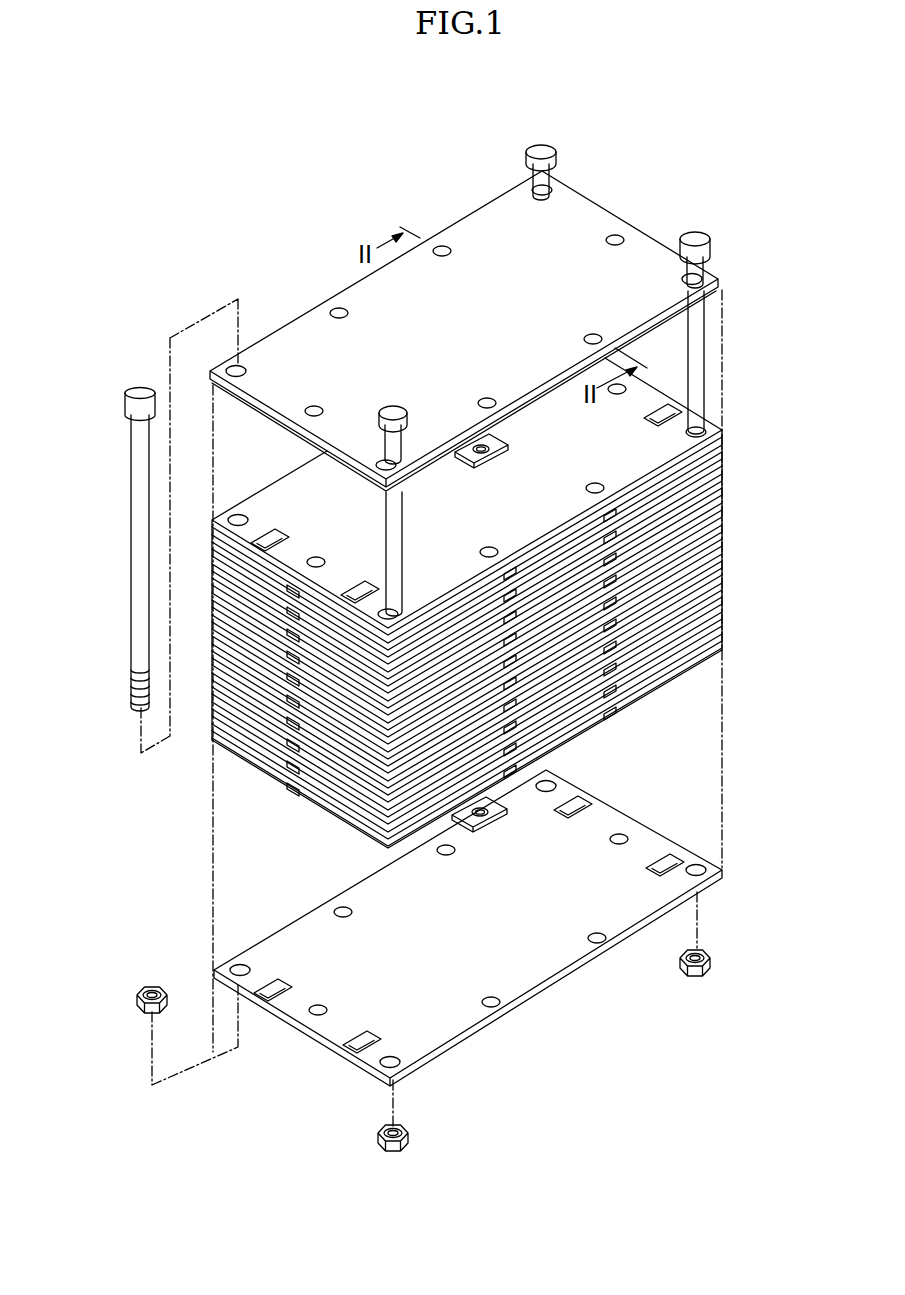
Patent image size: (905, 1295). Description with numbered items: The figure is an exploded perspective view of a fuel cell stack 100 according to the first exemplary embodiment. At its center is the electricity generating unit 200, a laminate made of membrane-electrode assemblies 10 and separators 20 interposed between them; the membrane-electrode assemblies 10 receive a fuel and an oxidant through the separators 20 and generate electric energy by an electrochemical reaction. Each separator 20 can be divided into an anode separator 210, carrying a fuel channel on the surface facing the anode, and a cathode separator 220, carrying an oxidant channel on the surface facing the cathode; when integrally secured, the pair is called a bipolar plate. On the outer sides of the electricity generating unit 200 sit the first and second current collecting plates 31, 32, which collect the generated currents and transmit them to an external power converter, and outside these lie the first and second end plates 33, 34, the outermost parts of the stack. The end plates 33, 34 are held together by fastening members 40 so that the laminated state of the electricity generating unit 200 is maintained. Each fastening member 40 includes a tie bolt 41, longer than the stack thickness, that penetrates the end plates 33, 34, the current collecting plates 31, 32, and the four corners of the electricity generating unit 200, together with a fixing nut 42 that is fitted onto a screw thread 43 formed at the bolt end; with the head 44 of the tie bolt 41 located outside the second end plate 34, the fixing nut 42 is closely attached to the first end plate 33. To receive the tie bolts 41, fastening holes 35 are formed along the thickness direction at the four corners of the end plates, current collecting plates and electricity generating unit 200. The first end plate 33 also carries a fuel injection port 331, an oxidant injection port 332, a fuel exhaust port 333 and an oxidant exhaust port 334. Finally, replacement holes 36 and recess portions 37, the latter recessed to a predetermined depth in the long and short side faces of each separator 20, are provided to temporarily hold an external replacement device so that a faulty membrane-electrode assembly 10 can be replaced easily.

The fuel cell stack 100 is at (451, 109).
The electricity generating unit 200 is at (748, 527).
The membrane-electrode assembly 10 is at (487, 602).
The separator 20 is at (518, 701).
The anode separator 210 is at (500, 716).
The cathode separator 220 is at (725, 572).
The first current collecting plate 31 is at (723, 655).
The second current collecting plate 32 is at (720, 303).
The first end plate 33 is at (455, 1025).
The second end plate 34 is at (498, 212).
The fastening hole 35 is at (551, 188).
The replacement hole 36 is at (618, 234).
The recess portion 37 is at (297, 772).
The fuel injection port 331 is at (578, 806).
The oxidant injection port 332 is at (280, 990).
The fuel exhaust port 333 is at (362, 1043).
The oxidant exhaust port 334 is at (665, 860).
The fastening member 40 is at (116, 485).
The tie bolt 41 is at (546, 176).
The fixing nut 42 is at (712, 962).
The screw thread 43 is at (133, 688).
The head 44 is at (138, 405).